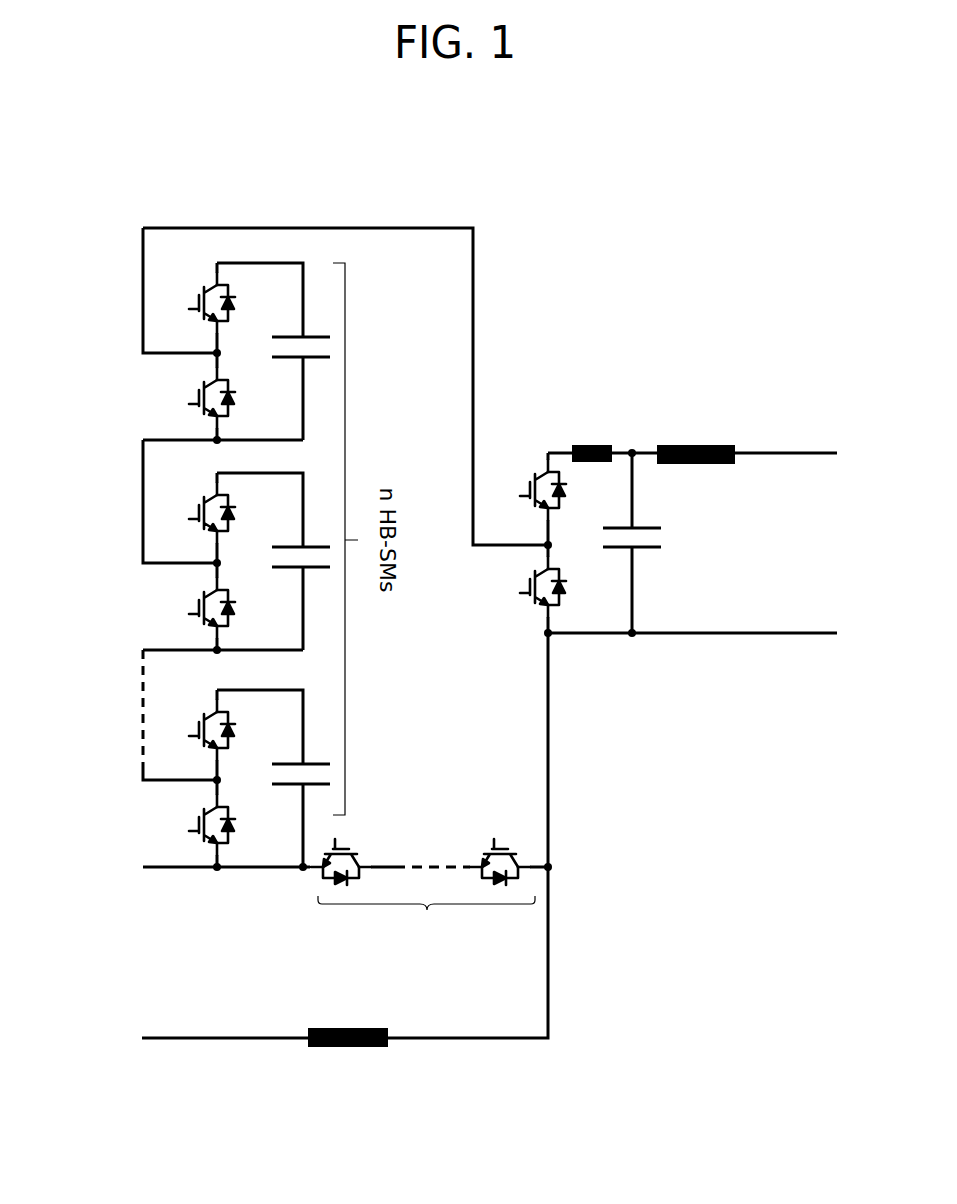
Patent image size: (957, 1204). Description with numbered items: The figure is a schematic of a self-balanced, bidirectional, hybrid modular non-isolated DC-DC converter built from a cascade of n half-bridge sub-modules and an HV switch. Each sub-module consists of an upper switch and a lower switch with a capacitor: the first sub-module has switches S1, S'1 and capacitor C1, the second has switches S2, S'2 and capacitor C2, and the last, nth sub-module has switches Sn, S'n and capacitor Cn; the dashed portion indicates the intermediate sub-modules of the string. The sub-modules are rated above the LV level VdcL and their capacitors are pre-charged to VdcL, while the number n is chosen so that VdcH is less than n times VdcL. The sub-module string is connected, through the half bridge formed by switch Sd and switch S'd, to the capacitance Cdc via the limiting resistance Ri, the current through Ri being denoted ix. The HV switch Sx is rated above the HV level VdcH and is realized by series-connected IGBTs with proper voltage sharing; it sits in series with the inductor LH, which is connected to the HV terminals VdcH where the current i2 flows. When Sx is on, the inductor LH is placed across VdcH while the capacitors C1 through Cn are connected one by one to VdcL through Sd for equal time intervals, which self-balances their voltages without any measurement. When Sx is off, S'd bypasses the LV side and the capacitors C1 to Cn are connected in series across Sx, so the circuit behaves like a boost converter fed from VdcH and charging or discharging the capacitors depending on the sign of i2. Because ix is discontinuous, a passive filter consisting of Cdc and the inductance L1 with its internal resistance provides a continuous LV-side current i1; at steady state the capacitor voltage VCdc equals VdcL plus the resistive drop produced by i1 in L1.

The upper switch of first half-bridge sub-module S1 is at (194, 315).
The lower switch of first half-bridge sub-module S'1 is at (191, 404).
The first sub-module capacitor C1 is at (276, 351).
The upper switch of second half-bridge sub-module S2 is at (194, 525).
The lower switch of second half-bridge sub-module S'2 is at (191, 614).
The second sub-module capacitor C2 is at (239, 561).
The upper switch of nth half-bridge sub-module Sn is at (194, 742).
The lower switch of nth half-bridge sub-module S'n is at (191, 831).
The nth sub-module capacitor Cn is at (276, 778).
The switch Sd is at (526, 505).
The switch S'd is at (520, 587).
The capacitance Cdc is at (615, 543).
The limiting resistance Ri is at (592, 475).
The current ix is at (603, 438).
The inductance L1 is at (694, 475).
The LV-side current i1 is at (800, 438).
The voltage of capacitance Cdc VCdc is at (689, 545).
The LV side voltage VdcL is at (802, 484).
The HV switch Sx is at (423, 886).
The inductor LH is at (348, 1019).
The HV side voltage VdcH is at (142, 877).
The HV-side current i2 is at (218, 1016).